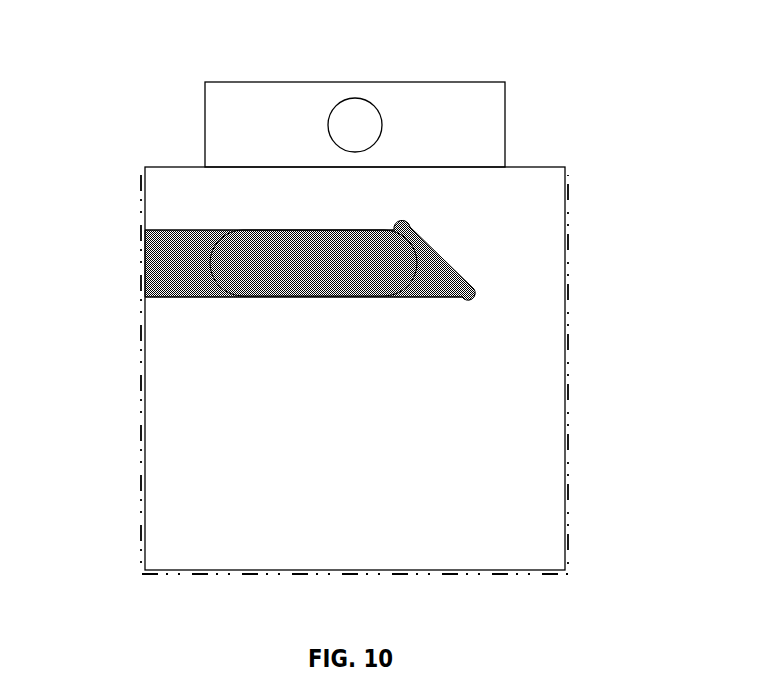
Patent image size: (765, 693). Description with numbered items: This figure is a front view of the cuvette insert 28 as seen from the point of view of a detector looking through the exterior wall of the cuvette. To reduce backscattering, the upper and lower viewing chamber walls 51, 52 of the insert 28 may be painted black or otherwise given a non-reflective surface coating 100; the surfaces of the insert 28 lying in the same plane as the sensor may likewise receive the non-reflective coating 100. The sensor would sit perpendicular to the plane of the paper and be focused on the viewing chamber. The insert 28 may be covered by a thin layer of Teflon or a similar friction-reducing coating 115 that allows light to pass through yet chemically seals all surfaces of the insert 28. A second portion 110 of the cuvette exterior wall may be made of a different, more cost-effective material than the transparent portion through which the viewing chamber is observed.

The cuvette insert 28 is at (155, 95).
The non-reflective surface coating 100 is at (252, 234).
The upper viewing chamber wall 51 is at (196, 230).
The lower viewing chamber wall 52 is at (195, 296).
The second portion of the cuvette exterior wall 110 is at (164, 271).
The friction-reducing coating 115 is at (567, 362).